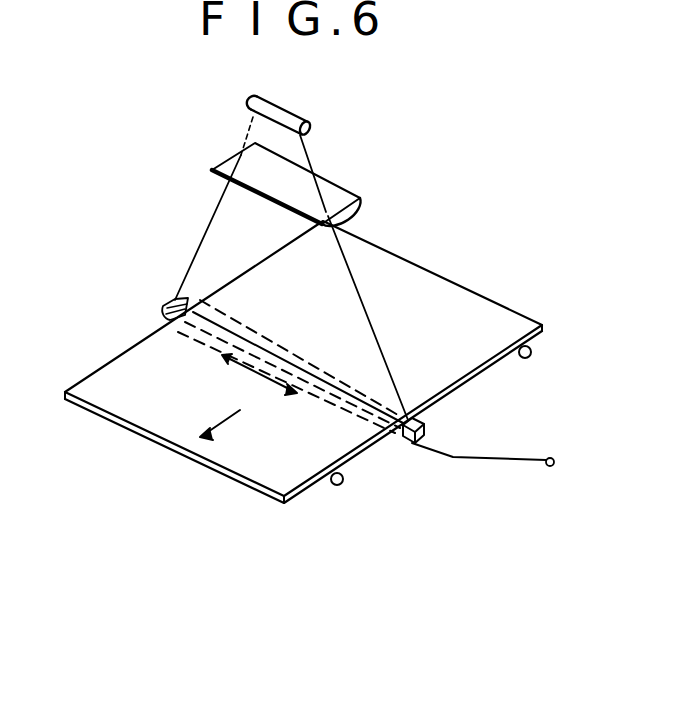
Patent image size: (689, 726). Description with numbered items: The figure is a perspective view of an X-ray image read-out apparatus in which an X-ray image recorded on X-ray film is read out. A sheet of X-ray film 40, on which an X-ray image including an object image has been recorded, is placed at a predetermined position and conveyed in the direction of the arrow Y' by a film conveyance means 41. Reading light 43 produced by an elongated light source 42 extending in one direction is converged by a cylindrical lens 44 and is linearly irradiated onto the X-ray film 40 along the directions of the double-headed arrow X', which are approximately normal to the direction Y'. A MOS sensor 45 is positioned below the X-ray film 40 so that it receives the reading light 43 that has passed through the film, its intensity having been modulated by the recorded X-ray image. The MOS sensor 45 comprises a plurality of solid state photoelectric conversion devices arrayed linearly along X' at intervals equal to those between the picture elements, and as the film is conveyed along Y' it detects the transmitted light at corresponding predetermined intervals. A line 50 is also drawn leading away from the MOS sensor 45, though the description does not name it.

The X-ray film 40 is at (512, 309).
The film conveyance means 41 is at (531, 355).
The elongated light source 42 is at (308, 114).
The reading light 43 is at (310, 153).
The cylindrical lens 44 is at (350, 193).
The MOS sensor 45 is at (424, 430).
The signal line 50 is at (552, 466).